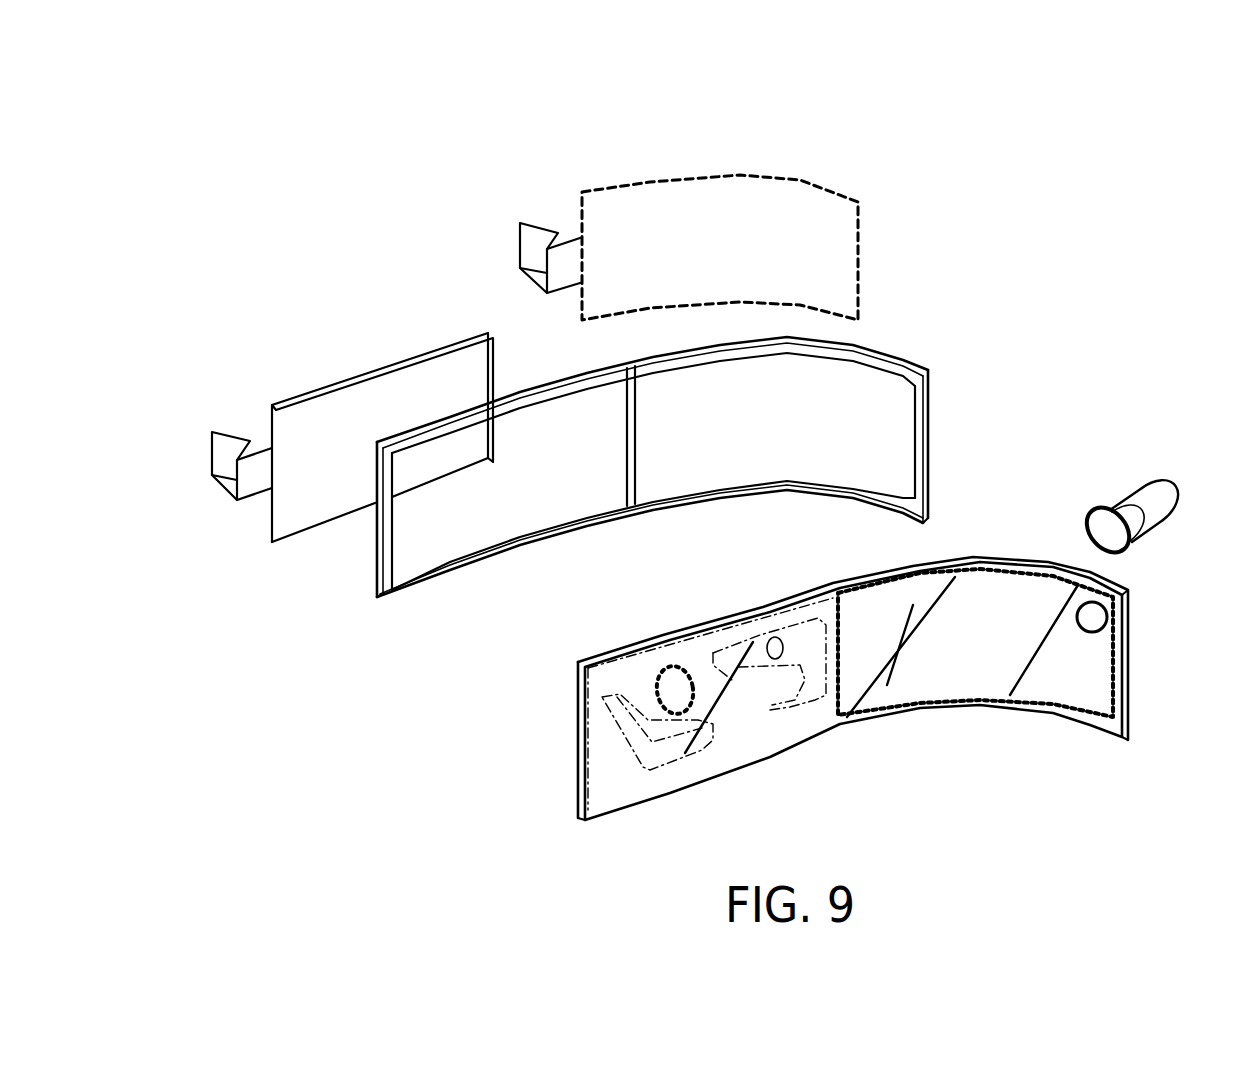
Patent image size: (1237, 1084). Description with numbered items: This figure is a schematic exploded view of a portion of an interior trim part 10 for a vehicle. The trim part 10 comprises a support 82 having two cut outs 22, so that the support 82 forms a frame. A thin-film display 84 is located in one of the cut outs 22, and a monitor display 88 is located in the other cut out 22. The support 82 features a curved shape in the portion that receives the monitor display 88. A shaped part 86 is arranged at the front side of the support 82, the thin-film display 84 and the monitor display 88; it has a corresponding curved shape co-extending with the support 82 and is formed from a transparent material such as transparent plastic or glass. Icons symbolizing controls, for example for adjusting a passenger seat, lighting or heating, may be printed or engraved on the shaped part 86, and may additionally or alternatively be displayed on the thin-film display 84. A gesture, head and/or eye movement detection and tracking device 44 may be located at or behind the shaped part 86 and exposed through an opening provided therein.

The trim part 10 is at (1033, 162).
The monitor display 88 is at (860, 240).
The thin-film display 84 is at (270, 515).
The support 82 is at (387, 598).
The cut outs 22 is at (447, 525).
The gesture, head and/or eye movement detection and tracking device 44 is at (1145, 485).
The shaped part 86 is at (817, 713).